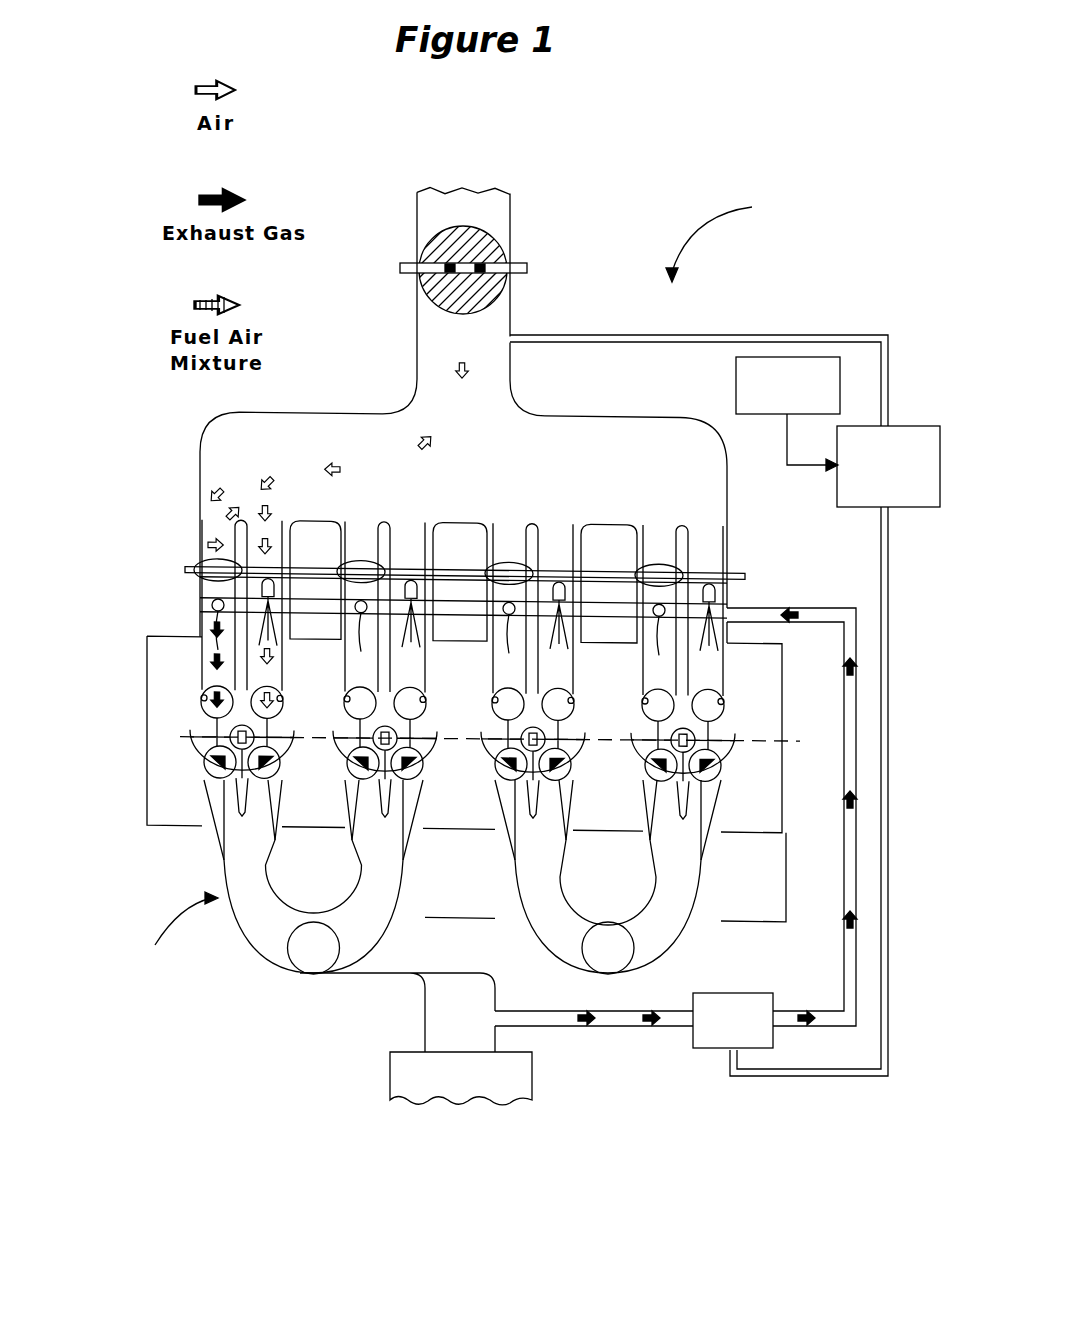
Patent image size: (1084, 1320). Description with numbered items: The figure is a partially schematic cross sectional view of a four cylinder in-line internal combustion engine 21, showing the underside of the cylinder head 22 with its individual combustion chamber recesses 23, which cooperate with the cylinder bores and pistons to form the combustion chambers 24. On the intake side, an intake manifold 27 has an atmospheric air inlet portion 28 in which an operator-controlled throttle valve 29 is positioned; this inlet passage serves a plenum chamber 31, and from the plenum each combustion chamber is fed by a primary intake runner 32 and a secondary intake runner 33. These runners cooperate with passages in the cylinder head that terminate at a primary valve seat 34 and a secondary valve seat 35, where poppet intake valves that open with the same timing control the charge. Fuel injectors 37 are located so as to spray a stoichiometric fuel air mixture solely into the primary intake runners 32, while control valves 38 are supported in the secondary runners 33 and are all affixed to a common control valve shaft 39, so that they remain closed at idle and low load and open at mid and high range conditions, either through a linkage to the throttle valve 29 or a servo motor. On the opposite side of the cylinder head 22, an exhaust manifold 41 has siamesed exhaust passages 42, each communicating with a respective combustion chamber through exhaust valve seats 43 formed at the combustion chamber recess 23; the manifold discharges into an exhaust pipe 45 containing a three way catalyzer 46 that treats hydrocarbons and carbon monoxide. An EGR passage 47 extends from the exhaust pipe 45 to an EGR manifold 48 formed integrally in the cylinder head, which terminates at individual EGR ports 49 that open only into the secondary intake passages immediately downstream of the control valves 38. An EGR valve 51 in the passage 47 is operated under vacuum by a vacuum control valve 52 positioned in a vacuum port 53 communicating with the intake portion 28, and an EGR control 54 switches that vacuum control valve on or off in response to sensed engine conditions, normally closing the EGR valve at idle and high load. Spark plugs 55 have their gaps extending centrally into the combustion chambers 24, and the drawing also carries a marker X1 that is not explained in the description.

The internal combustion engine 21 is at (727, 240).
The cylinder head 22 is at (147, 828).
The combustion chamber recess 23 is at (190, 740).
The combustion chamber 24 is at (197, 746).
The intake manifold 27 is at (195, 462).
The atmospheric air inlet portion 28 is at (513, 322).
The throttle valve 29 is at (505, 252).
The plenum chamber 31 is at (380, 432).
The primary intake runner 32 is at (290, 557).
The secondary intake runner 33 is at (203, 583).
The primary valve seat 34 is at (282, 699).
The secondary valve seat 35 is at (201, 702).
The fuel injector 37 is at (268, 567).
The control valve 38 is at (205, 561).
The control valve shaft 39 is at (203, 567).
The exhaust manifold 41 is at (173, 932).
The siamesed exhaust passage 42 is at (245, 932).
The exhaust valve seat 43 is at (207, 858).
The exhaust pipe 45 is at (430, 1035).
The three way catalyzer 46 is at (510, 1087).
The EGR passage 47 is at (860, 885).
The EGR manifold 48 is at (242, 597).
The EGR port 49 is at (212, 611).
The EGR valve 51 is at (690, 1036).
The vacuum control valve 52 is at (856, 500).
The vacuum port 53 is at (888, 700).
The EGR control 54 is at (736, 398).
The spark plug 55 is at (192, 772).
The reference position X1 is at (762, 735).